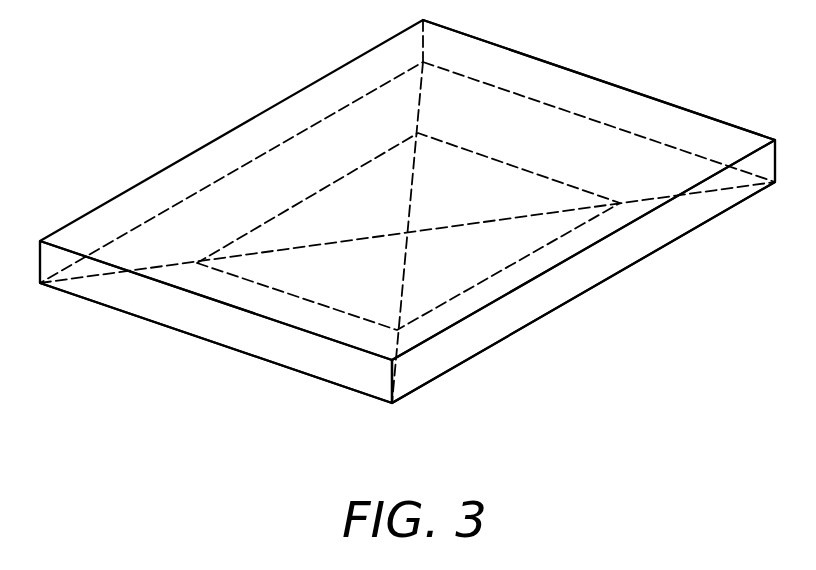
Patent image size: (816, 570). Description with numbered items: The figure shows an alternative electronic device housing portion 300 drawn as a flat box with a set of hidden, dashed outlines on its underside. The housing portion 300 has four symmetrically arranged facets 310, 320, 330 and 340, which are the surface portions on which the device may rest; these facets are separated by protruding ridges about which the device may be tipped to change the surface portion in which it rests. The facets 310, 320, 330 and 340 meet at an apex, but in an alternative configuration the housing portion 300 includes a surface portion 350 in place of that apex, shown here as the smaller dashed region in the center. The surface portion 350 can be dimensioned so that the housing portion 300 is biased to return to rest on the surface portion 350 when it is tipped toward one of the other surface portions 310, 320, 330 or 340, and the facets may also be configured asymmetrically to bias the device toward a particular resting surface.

The housing portion 300 is at (724, 414).
The facet 310 is at (278, 343).
The facet 320 is at (577, 272).
The facet 330 is at (633, 175).
The facet 340 is at (282, 185).
The surface portion 350 is at (395, 217).